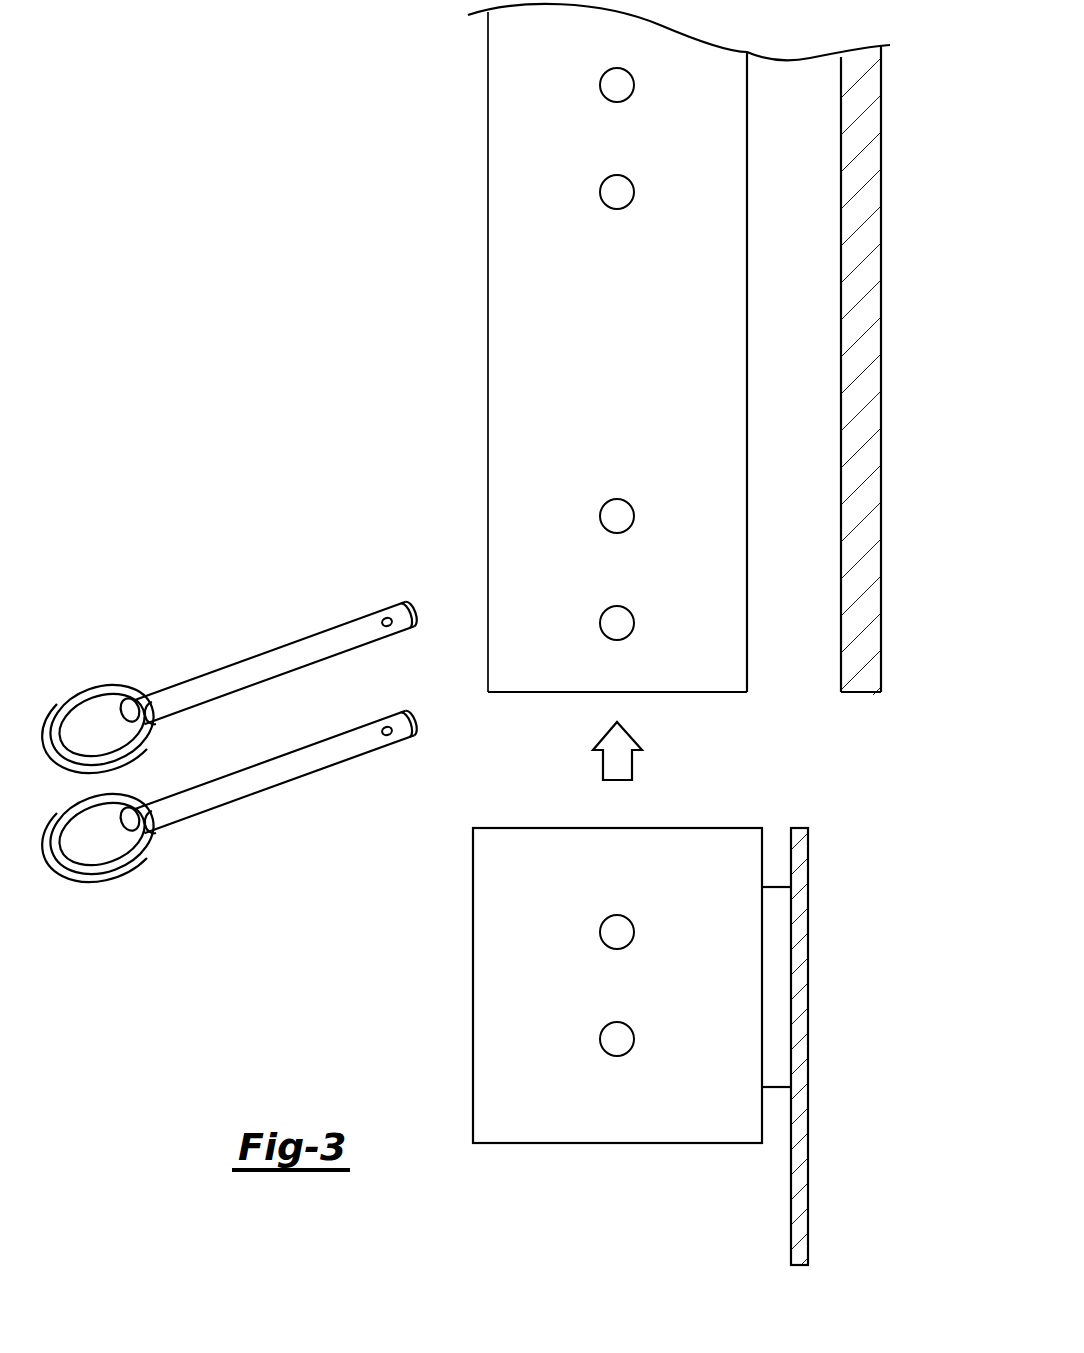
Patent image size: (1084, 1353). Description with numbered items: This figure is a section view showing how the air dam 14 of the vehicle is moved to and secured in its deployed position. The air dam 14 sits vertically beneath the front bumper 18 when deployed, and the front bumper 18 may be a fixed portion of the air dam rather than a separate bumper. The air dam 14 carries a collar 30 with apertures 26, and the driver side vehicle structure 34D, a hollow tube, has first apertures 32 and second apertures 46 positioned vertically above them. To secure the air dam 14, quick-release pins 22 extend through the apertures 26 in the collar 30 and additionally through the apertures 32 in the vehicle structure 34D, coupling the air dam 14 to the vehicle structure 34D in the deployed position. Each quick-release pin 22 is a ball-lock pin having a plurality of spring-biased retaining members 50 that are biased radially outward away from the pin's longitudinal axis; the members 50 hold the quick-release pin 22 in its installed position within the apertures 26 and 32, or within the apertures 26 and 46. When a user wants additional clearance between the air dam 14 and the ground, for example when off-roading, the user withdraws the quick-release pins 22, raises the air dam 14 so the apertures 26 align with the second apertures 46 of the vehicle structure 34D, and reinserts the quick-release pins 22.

The air dam 14 is at (808, 940).
The front bumper 18 is at (881, 200).
The quick-release pins 22 is at (212, 680).
The apertures 26 is at (600, 932).
The collar 30 is at (678, 828).
The apertures 32 is at (600, 623).
The vehicle structure 34D is at (747, 410).
The second apertures 46 is at (600, 85).
The spring-biased retaining members 50 is at (392, 627).